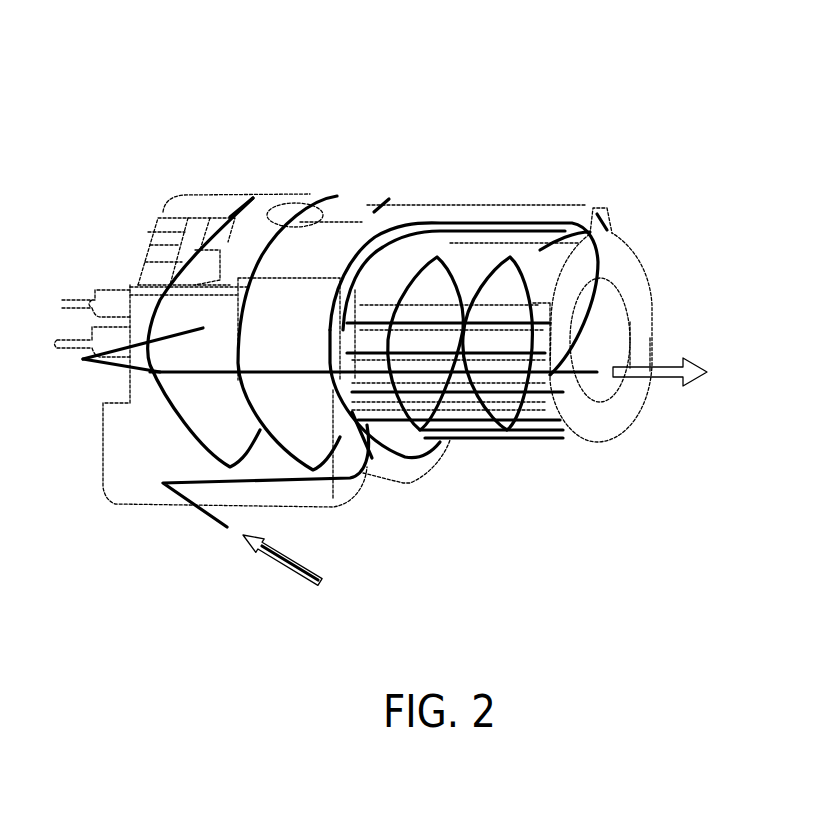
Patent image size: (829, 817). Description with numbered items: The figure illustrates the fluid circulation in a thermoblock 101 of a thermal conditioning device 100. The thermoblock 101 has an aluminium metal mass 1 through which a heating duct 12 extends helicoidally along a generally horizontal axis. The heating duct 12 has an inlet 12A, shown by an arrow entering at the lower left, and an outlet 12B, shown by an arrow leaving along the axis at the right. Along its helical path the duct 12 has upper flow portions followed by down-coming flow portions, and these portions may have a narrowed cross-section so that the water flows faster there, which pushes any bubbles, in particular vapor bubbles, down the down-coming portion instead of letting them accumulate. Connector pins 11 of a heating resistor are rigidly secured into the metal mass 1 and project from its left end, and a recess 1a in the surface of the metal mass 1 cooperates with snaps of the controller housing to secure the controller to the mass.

The thermal conditioning device 100 is at (271, 138).
The thermoblock 101 is at (370, 216).
The metal mass 1 is at (610, 220).
The recess 1a is at (155, 237).
The connector pins 11 is at (117, 300).
The heating duct 12 is at (420, 275).
The inlet 12A is at (322, 570).
The outlet 12B is at (667, 378).